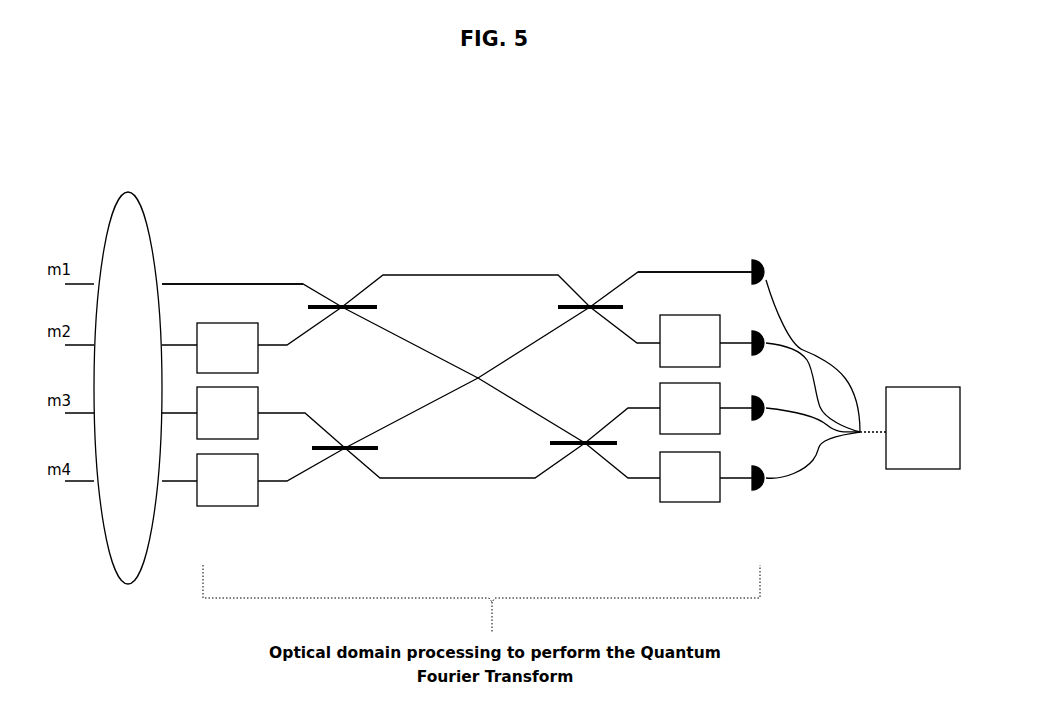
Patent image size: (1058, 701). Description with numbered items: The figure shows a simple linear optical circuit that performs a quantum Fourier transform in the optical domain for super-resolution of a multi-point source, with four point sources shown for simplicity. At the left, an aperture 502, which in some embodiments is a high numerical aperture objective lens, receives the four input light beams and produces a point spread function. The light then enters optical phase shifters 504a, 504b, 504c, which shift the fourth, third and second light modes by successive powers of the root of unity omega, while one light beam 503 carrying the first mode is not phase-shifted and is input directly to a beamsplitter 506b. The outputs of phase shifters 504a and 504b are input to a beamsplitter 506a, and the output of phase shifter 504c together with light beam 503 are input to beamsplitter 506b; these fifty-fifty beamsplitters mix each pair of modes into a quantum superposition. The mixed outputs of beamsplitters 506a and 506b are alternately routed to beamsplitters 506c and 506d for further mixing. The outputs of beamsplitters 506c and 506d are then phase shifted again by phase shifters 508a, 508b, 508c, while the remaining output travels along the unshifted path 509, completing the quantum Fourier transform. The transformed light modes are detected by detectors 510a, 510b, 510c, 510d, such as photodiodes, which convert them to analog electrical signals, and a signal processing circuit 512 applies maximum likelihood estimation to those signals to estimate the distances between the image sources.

The aperture 502 is at (103, 530).
The light beam 503 is at (258, 282).
The phase shifter 504a is at (236, 508).
The phase shifter 504b is at (313, 388).
The optical phase shifter 504c is at (224, 323).
The beamsplitter 506a is at (345, 452).
The beamsplitter 506b is at (345, 305).
The beamsplitter 506c is at (585, 447).
The beamsplitter 506d is at (590, 305).
The phase shifter 508a is at (668, 504).
The phase shifter 508b is at (659, 384).
The optical phase shifter 508c is at (687, 315).
The optical path 509 is at (703, 272).
The detector 510a is at (758, 502).
The detector 510b is at (749, 396).
The detector 510c is at (749, 331).
The detector 510d is at (758, 256).
The signal processing circuit 512 is at (915, 470).